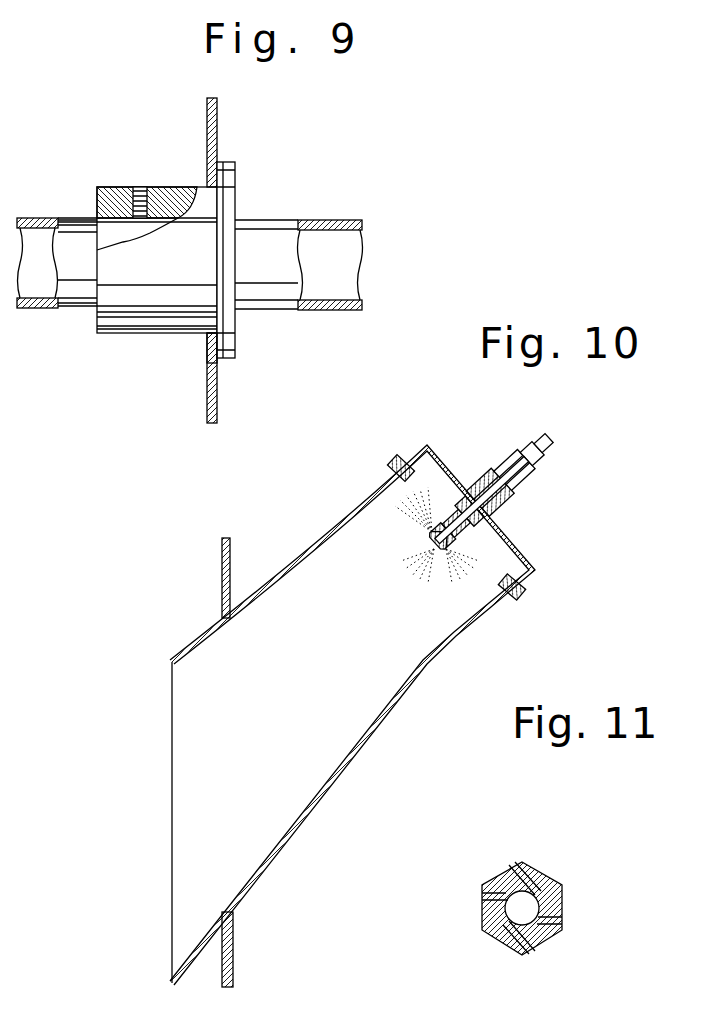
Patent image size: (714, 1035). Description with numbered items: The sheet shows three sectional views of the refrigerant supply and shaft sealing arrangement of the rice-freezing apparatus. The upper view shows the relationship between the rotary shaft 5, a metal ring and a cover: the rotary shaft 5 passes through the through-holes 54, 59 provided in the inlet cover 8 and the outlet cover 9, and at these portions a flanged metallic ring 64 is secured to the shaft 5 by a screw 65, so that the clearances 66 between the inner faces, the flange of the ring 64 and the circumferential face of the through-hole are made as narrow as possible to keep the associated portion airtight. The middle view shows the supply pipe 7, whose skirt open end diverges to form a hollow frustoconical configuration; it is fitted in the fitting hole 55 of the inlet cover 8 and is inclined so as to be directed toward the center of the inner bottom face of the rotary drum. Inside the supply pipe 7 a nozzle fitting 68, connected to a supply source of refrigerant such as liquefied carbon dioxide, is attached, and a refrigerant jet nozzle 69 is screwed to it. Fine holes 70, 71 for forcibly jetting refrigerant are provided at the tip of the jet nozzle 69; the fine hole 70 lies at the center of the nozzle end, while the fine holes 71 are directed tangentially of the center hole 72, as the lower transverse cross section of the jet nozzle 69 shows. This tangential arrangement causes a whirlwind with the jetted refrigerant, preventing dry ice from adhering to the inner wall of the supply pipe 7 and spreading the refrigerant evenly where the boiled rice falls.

In FIG. 9, the rotary shaft 5 is at (281, 230).
In FIG. 10, the supply pipe 7 is at (363, 742).
In FIG. 9, the inlet cover 8 is at (249, 260).
In FIG. 10, the inlet cover 8 is at (221, 571).
In FIG. 9, the outlet cover 9 is at (218, 128).
In FIG. 9, the through-hole 54 is at (137, 228).
In FIG. 10, the fitting hole 55 is at (234, 910).
In FIG. 9, the through-hole 59 is at (203, 186).
In FIG. 9, the flanged metallic ring 64 is at (232, 338).
In FIG. 9, the screw 65 is at (140, 186).
In FIG. 9, the clearance 66 is at (207, 353).
In FIG. 10, the nozzle fitting 68 is at (470, 490).
In FIG. 10, the refrigerant jet nozzle 69 is at (437, 530).
In FIG. 11, the refrigerant jet nozzle 69 is at (535, 872).
In FIG. 10, the fine hole 70 is at (437, 548).
In FIG. 10, the fine holes 71 is at (437, 535).
In FIG. 11, the fine holes 71 is at (558, 880).
In FIG. 10, the center hole 72 is at (455, 534).
In FIG. 11, the center hole 72 is at (505, 908).